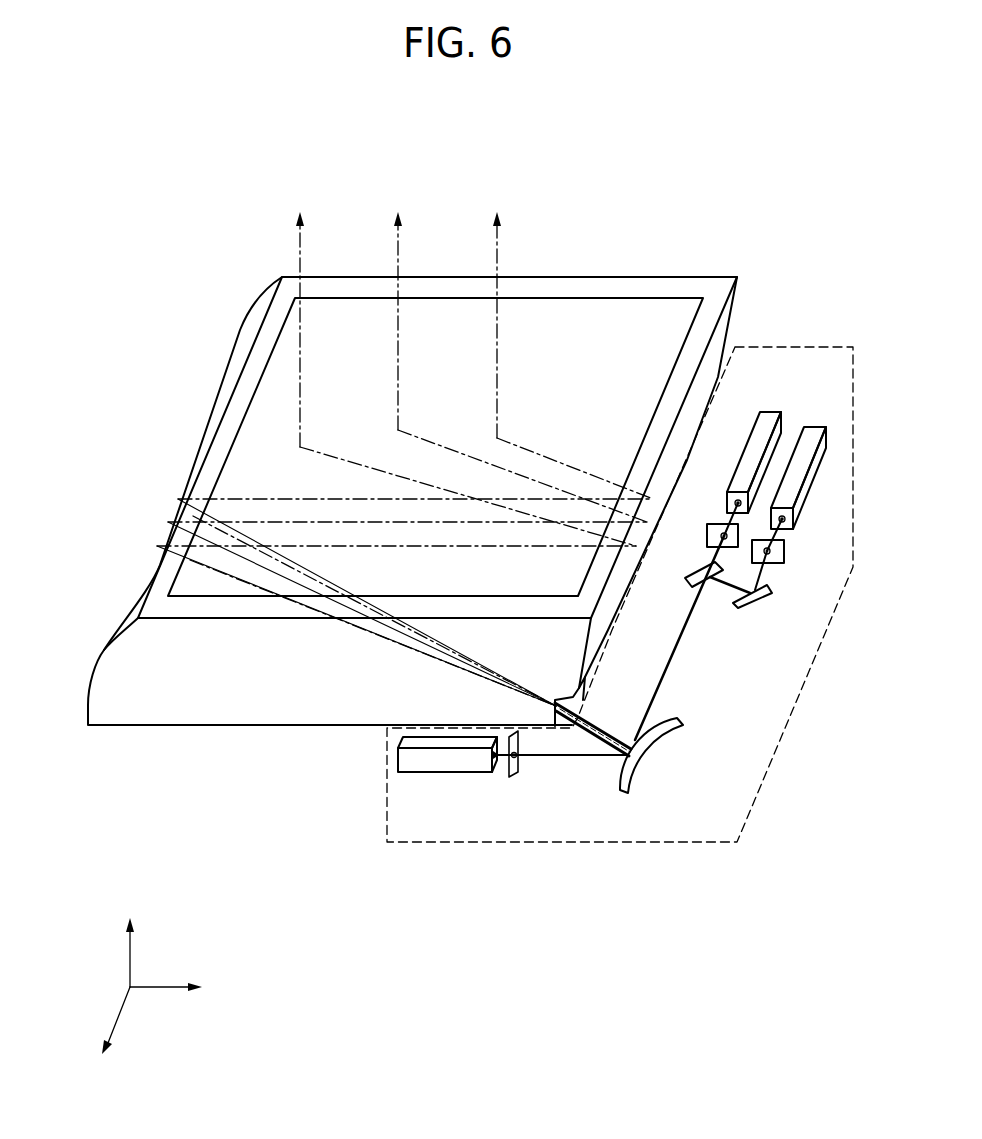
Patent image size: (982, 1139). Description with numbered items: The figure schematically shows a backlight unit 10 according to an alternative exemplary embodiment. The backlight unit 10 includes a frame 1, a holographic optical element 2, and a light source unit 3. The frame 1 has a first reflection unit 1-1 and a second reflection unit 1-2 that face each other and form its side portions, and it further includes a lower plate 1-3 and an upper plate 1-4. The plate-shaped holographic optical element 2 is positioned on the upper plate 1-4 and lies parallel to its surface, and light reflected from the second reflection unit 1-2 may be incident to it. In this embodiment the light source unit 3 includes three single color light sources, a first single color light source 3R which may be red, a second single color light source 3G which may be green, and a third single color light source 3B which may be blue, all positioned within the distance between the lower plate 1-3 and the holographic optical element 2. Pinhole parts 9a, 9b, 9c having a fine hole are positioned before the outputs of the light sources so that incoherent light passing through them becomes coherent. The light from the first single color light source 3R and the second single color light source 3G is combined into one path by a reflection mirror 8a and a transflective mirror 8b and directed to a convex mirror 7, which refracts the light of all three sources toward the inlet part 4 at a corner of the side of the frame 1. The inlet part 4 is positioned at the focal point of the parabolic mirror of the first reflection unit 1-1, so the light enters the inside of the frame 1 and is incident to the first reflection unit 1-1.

The backlight unit 10 is at (630, 240).
The frame 1 is at (641, 883).
The first reflection unit 1-1 is at (142, 577).
The second reflection unit 1-2 is at (613, 593).
The lower plate 1-3 is at (337, 727).
The upper plate 1-4 is at (248, 380).
The holographic optical element 2 is at (290, 333).
The light source unit 3 is at (800, 700).
The first single color light source 3R is at (768, 417).
The second single color light source 3G is at (817, 432).
The third single color light source 3B is at (438, 767).
The inlet part 4 is at (543, 717).
The convex mirror 7 is at (668, 728).
The reflection mirror 8a is at (758, 603).
The transflective mirror 8b is at (720, 570).
The pinhole part 9a is at (515, 765).
The pinhole part 9b is at (787, 550).
The pinhole part 9c is at (713, 525).